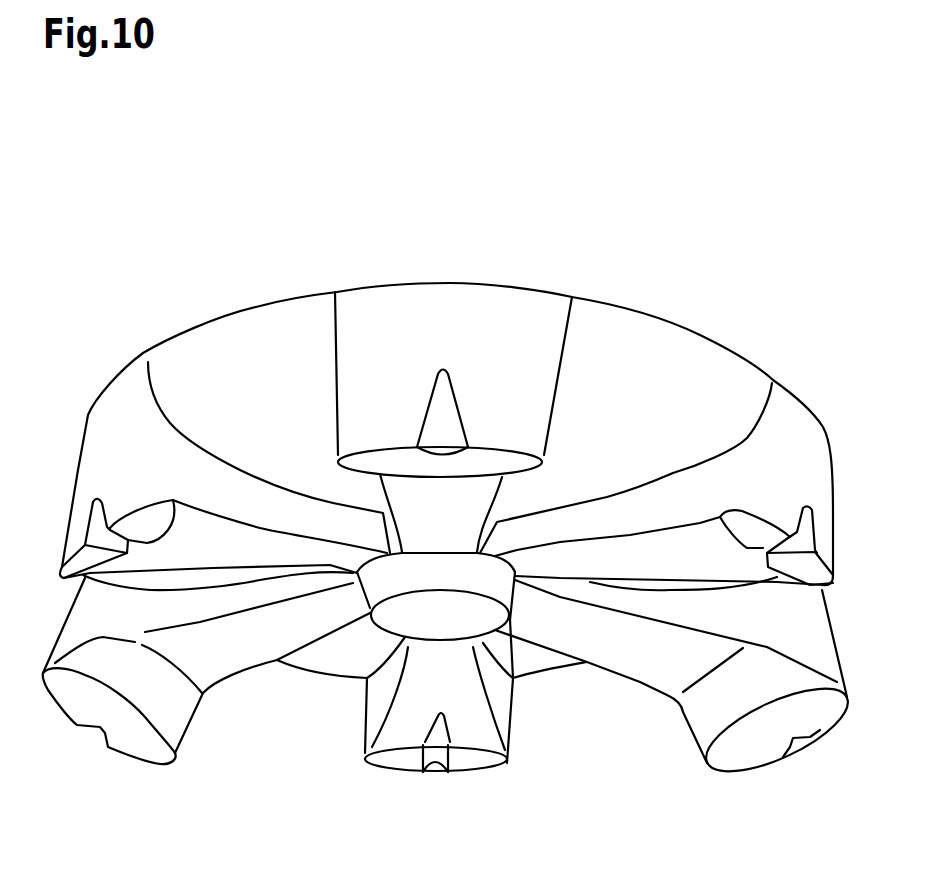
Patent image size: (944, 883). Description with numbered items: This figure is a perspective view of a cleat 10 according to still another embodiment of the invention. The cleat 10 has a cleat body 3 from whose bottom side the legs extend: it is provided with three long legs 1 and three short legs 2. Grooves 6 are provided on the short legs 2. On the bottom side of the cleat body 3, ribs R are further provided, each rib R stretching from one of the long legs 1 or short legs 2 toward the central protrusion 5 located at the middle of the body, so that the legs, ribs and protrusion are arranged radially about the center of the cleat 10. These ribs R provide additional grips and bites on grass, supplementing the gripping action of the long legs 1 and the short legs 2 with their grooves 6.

The cleat 10 is at (606, 275).
The cleat body 3 is at (677, 380).
The central protrusion 5 is at (457, 624).
The ribs R is at (650, 560).
The long legs 1 is at (748, 760).
The short legs 2 is at (483, 758).
The grooves 6 is at (436, 773).